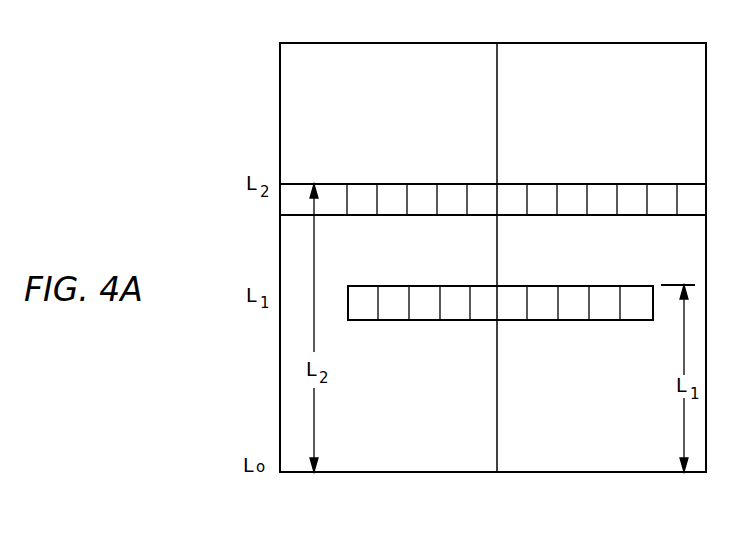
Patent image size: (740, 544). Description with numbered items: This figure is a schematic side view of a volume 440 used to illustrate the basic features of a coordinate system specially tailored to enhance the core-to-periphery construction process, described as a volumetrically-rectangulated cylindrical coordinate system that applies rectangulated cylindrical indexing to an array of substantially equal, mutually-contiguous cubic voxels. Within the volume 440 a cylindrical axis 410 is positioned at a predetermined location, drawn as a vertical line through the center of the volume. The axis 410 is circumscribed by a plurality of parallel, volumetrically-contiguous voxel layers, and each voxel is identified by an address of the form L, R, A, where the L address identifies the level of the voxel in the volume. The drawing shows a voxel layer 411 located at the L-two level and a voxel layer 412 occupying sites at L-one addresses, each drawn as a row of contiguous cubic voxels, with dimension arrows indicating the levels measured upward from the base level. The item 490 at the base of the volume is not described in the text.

The volume 440 is at (327, 57).
The cylindrical axis 410 is at (497, 101).
The voxel layer 411 is at (369, 184).
The voxel layer 412 is at (398, 286).
The base line 490 is at (497, 472).